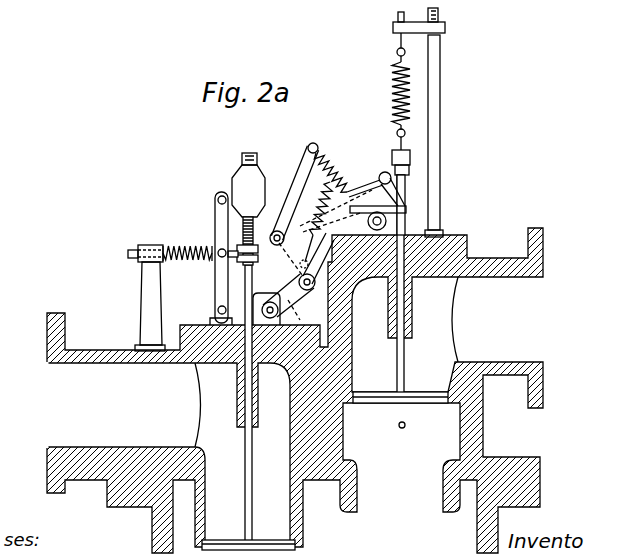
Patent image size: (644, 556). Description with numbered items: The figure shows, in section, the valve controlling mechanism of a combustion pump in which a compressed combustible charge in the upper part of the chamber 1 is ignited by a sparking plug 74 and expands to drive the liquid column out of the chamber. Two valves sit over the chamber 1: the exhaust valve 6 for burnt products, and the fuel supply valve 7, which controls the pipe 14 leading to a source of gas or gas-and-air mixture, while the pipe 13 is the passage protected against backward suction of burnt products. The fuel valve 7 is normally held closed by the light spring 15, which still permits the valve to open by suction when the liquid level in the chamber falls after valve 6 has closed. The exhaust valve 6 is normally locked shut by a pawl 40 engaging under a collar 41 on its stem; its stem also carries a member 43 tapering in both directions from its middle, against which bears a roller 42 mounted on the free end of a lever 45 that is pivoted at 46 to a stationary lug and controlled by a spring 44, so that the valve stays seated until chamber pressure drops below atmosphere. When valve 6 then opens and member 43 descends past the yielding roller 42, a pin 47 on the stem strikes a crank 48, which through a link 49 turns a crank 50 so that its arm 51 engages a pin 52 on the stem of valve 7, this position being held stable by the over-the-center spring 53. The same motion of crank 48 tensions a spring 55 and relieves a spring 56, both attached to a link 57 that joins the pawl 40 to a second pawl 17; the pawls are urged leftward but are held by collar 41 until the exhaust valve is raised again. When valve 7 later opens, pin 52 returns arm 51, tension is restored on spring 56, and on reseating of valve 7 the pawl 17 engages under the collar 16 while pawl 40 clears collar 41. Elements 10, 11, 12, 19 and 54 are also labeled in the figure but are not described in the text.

The chamber 1 is at (295, 390).
The exhaust valve 6 is at (248, 407).
The fuel supply valve 7 is at (414, 396).
The flange 10 is at (118, 477).
The valve stem guide 11 is at (224, 366).
The bonnet 12 is at (468, 245).
The pipe 13 is at (124, 405).
The pipe 14 is at (497, 319).
The spring 15 is at (393, 87).
The collar 16 is at (405, 172).
The pawl 17 is at (392, 193).
The rod 19 is at (440, 83).
The pawl 40 is at (262, 298).
The collar 41 is at (237, 254).
The roller 42 is at (222, 196).
The member 43 is at (215, 212).
The spring 44 is at (175, 250).
The lever 45 is at (215, 232).
The pivot 46 is at (222, 312).
The pin 47 is at (245, 265).
The crank 48 is at (299, 285).
The link 49 is at (305, 167).
The crank 50 is at (332, 170).
The arm 51 is at (352, 188).
The pin 52 is at (407, 177).
The spring 53 is at (315, 146).
The spring 54 is at (327, 200).
The spring 55 is at (307, 262).
The spring 56 is at (307, 222).
The link 57 is at (251, 240).
The sparking plug 74 is at (402, 428).